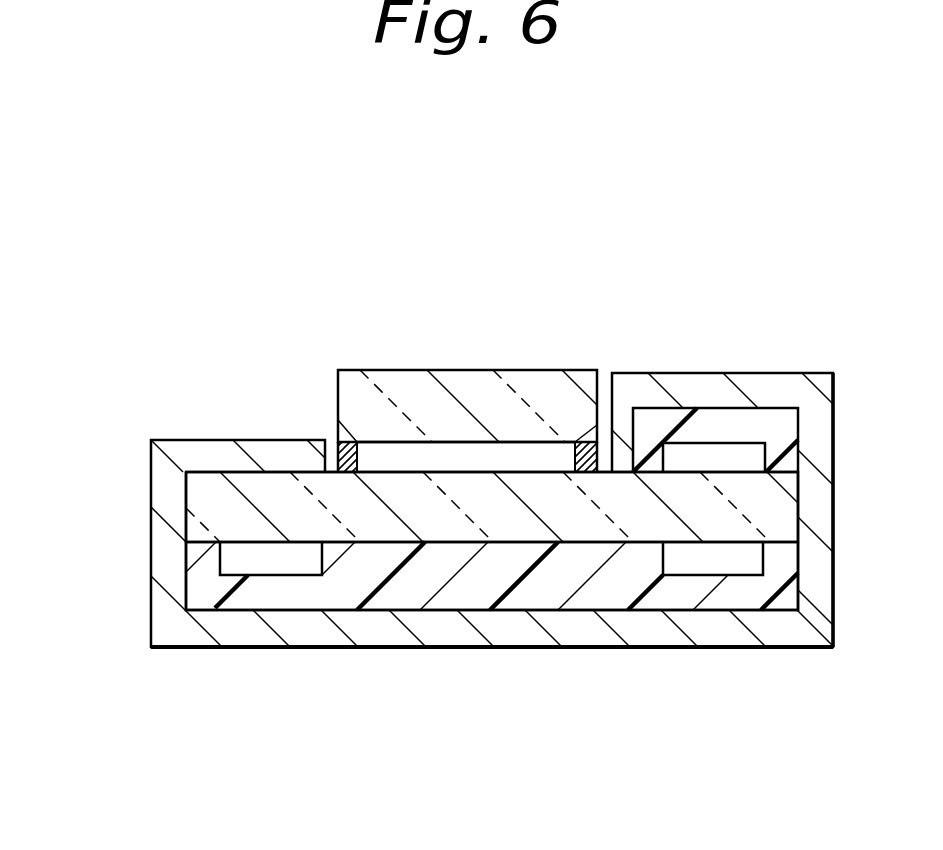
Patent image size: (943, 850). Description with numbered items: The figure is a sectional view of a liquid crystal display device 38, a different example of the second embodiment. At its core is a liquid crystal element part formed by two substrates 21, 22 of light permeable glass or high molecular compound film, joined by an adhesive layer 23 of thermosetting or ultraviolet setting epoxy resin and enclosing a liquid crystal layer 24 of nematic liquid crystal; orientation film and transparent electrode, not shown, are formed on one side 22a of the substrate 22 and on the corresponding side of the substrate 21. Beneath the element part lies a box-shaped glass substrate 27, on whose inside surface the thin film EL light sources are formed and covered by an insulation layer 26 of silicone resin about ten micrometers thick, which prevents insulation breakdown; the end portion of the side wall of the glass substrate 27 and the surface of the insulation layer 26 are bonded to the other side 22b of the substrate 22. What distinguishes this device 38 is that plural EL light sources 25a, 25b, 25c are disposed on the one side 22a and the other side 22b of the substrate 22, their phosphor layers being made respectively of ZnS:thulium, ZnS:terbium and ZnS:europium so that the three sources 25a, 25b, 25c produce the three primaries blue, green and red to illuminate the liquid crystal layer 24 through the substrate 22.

The liquid crystal display device 38 is at (507, 192).
The substrate 21 is at (472, 387).
The substrate 22 is at (278, 483).
The one side of substrate 22a is at (248, 470).
The other side of substrate 22b is at (205, 543).
The adhesive layer 23 is at (333, 443).
The liquid crystal layer 24 is at (393, 452).
The EL light source 25a is at (697, 458).
The EL light source 25b is at (727, 570).
The EL light source 25c is at (255, 562).
The insulation layer 26 is at (773, 417).
The glass substrate 27 is at (432, 632).